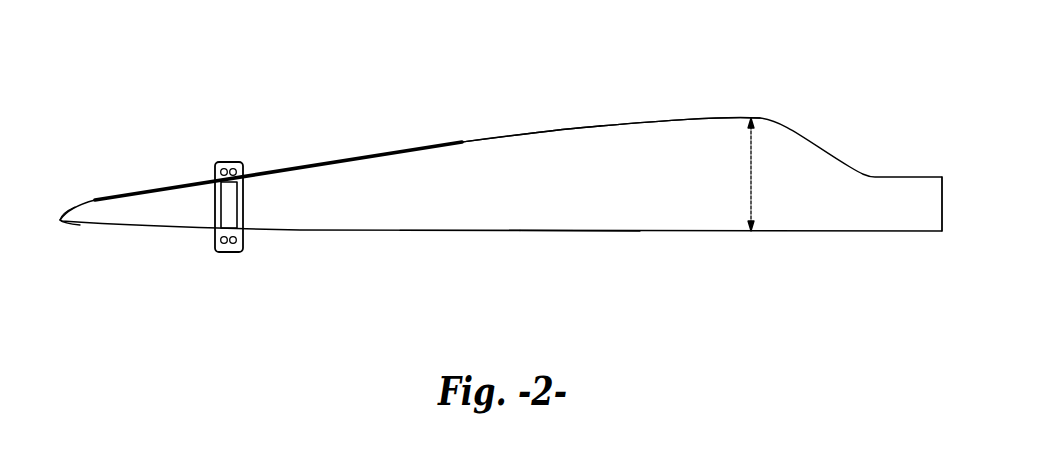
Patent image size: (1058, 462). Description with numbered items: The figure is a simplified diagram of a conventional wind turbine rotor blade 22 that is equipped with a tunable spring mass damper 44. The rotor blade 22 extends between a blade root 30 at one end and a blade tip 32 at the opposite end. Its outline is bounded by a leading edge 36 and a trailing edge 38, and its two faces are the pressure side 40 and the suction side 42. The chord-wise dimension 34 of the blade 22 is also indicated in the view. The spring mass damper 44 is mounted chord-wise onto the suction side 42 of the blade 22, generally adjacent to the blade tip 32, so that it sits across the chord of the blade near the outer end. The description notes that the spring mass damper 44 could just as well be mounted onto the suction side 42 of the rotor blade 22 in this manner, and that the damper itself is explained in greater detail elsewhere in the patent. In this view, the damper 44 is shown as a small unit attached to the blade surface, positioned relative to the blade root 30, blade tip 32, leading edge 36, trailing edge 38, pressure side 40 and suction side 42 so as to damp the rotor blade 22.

The rotor blade 22 is at (660, 214).
The blade root 30 is at (942, 218).
The blade tip 32 is at (64, 218).
The chord-wise dimension 34 is at (753, 197).
The leading edge 36 is at (578, 232).
The trailing edge 38 is at (565, 128).
The pressure side 40 is at (635, 160).
The suction side 42 is at (478, 213).
The spring mass damper 44 is at (244, 146).